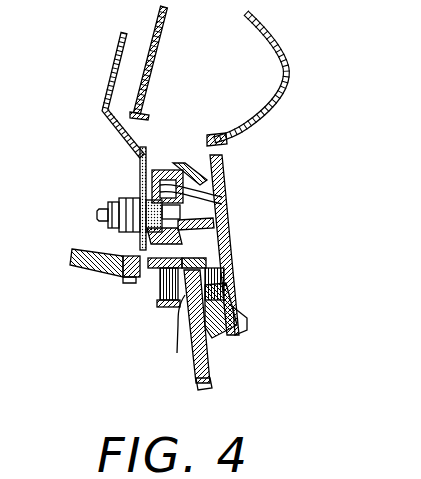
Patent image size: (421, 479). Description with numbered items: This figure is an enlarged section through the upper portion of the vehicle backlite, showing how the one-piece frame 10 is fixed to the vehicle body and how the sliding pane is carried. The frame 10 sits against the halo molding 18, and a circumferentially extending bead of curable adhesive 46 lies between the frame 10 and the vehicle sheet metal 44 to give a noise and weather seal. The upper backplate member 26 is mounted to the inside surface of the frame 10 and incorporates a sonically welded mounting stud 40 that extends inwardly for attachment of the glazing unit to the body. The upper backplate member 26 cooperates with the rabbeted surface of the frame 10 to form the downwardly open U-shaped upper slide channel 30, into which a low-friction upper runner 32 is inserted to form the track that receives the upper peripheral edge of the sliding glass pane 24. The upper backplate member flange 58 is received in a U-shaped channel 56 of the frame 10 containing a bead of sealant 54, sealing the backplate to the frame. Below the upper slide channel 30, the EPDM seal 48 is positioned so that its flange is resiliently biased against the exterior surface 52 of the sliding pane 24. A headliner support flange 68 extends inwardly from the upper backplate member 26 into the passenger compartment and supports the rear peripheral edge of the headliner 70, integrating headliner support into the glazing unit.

The frame 10 is at (235, 238).
The halo molding 18 is at (268, 27).
The sliding glass pane 24 is at (190, 387).
The upper backplate member 26 is at (170, 297).
The upper slide channel 30 is at (200, 372).
The upper runner 32 is at (233, 283).
The mounting stud 40 is at (108, 206).
The sheet metal 44 is at (106, 121).
The bead of curable adhesive 46 is at (140, 157).
The EPDM seal 48 is at (246, 319).
The exterior surface 52 is at (214, 373).
The bead of sealant 54 is at (197, 160).
The U-shaped channel 56 is at (225, 199).
The upper backplate member flange 58 is at (163, 170).
The headliner support flange 68 is at (131, 281).
The headliner 70 is at (85, 250).